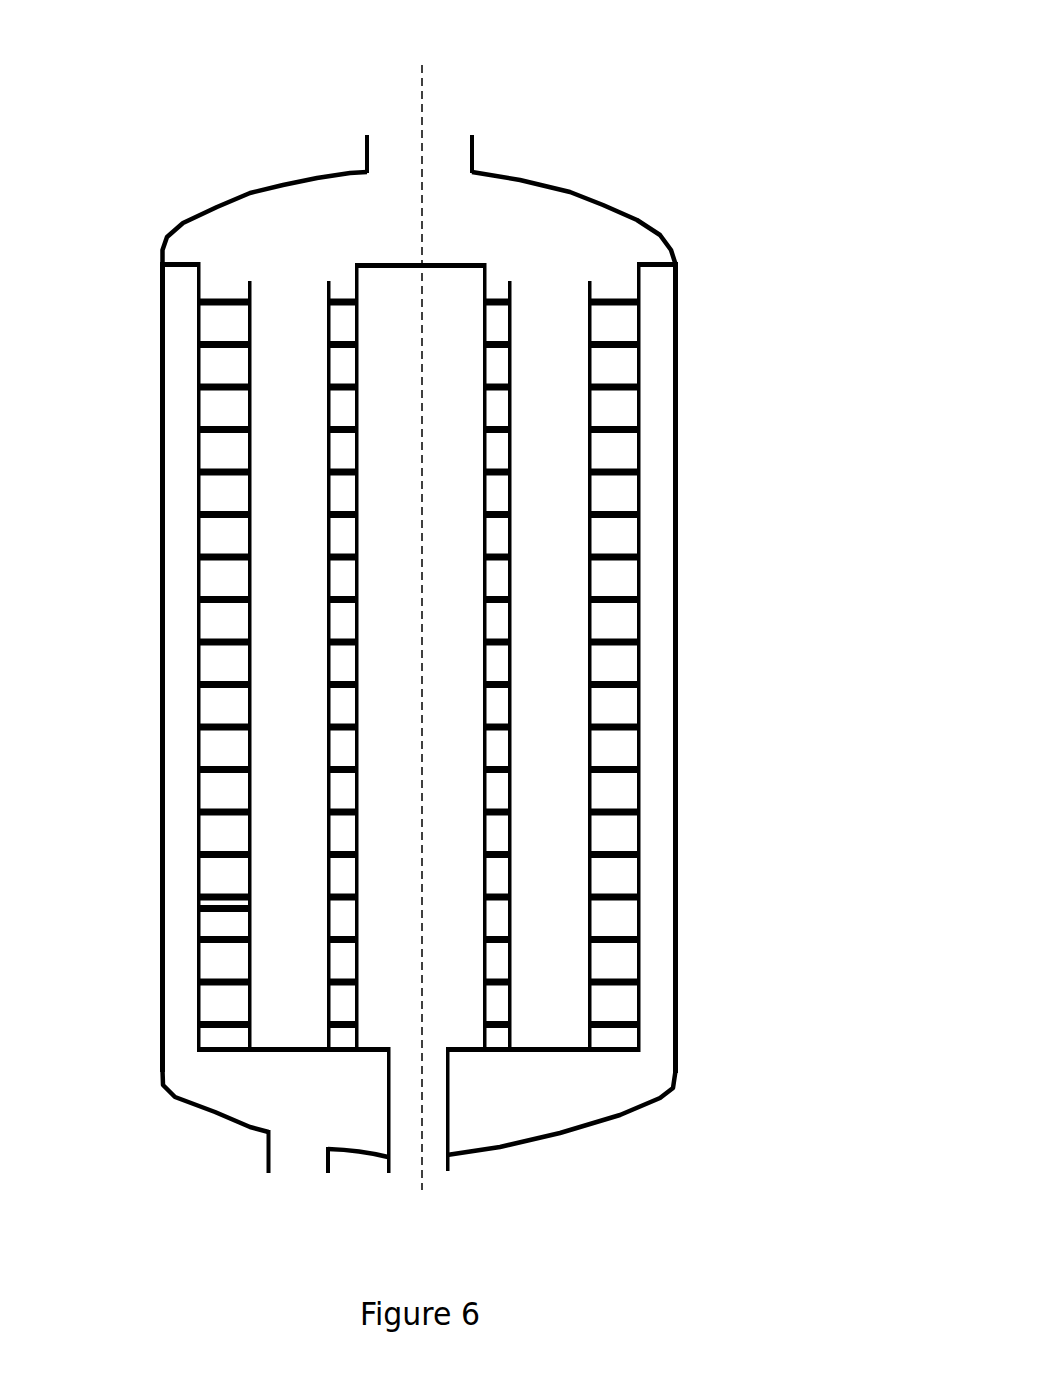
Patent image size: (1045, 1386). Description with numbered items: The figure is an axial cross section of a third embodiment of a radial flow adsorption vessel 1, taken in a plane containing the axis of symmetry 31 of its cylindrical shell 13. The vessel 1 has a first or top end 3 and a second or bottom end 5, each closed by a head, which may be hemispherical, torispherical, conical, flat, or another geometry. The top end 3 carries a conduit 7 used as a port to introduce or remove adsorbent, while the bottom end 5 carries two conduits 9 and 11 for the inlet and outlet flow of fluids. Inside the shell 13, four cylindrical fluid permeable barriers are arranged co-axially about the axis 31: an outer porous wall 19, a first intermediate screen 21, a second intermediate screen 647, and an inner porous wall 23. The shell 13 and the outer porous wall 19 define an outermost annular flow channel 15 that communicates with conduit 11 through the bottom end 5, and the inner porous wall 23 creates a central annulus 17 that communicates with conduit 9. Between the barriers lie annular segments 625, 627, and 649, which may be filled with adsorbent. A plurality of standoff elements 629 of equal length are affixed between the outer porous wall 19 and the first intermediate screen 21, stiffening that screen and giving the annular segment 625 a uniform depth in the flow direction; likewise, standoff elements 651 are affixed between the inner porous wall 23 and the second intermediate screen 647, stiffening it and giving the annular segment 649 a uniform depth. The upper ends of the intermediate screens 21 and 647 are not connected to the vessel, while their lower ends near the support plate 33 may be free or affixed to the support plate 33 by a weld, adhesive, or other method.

The vessel 1 is at (707, 396).
The first or top end 3 is at (595, 197).
The second or bottom end 5 is at (622, 1117).
The conduit 7 is at (445, 143).
The conduit 9 is at (435, 1152).
The conduit 11 is at (296, 1167).
The shell 13 is at (678, 707).
The outermost annular flow channel 15 is at (653, 864).
The central annulus 17 is at (452, 538).
The outer porous wall 19 is at (195, 818).
The first intermediate screen 21 is at (243, 905).
The inner porous wall 23 is at (345, 990).
The axis of symmetry 31 is at (418, 73).
The support plate 33 is at (520, 1052).
The annular segment 625 is at (222, 540).
The annular segment 627 is at (528, 625).
The standoff elements 629 is at (228, 678).
The second intermediate screen 647 is at (327, 453).
The annular segment 649 is at (343, 371).
The standoff elements 651 is at (343, 343).